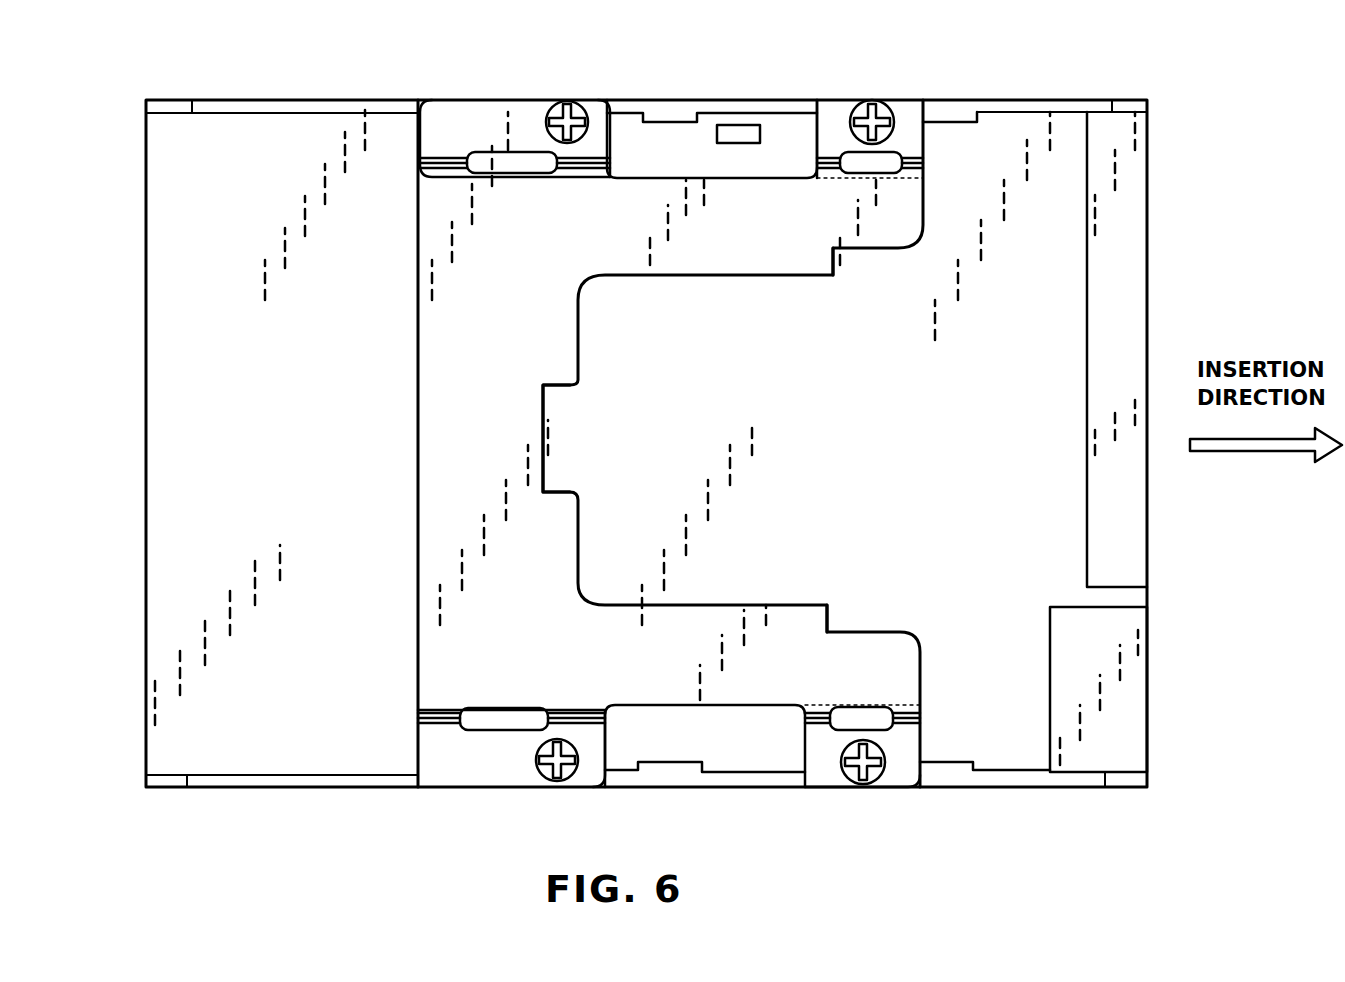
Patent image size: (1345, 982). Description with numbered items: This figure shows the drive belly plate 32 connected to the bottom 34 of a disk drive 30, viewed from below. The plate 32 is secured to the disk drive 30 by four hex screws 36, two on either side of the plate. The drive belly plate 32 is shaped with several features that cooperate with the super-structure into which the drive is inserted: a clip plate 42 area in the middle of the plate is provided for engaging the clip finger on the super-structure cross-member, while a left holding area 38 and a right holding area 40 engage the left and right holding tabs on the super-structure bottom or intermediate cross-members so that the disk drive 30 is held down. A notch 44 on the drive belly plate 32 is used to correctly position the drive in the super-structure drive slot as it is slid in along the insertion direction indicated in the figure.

The disk drive 30 is at (367, 100).
The drive belly plate 32 is at (528, 240).
The bottom 34 is at (232, 157).
The hex screws 36 is at (570, 100).
The left holding area 38 is at (880, 222).
The right holding area 40 is at (882, 655).
The clip plate 42 is at (538, 425).
The notch 44 is at (836, 262).